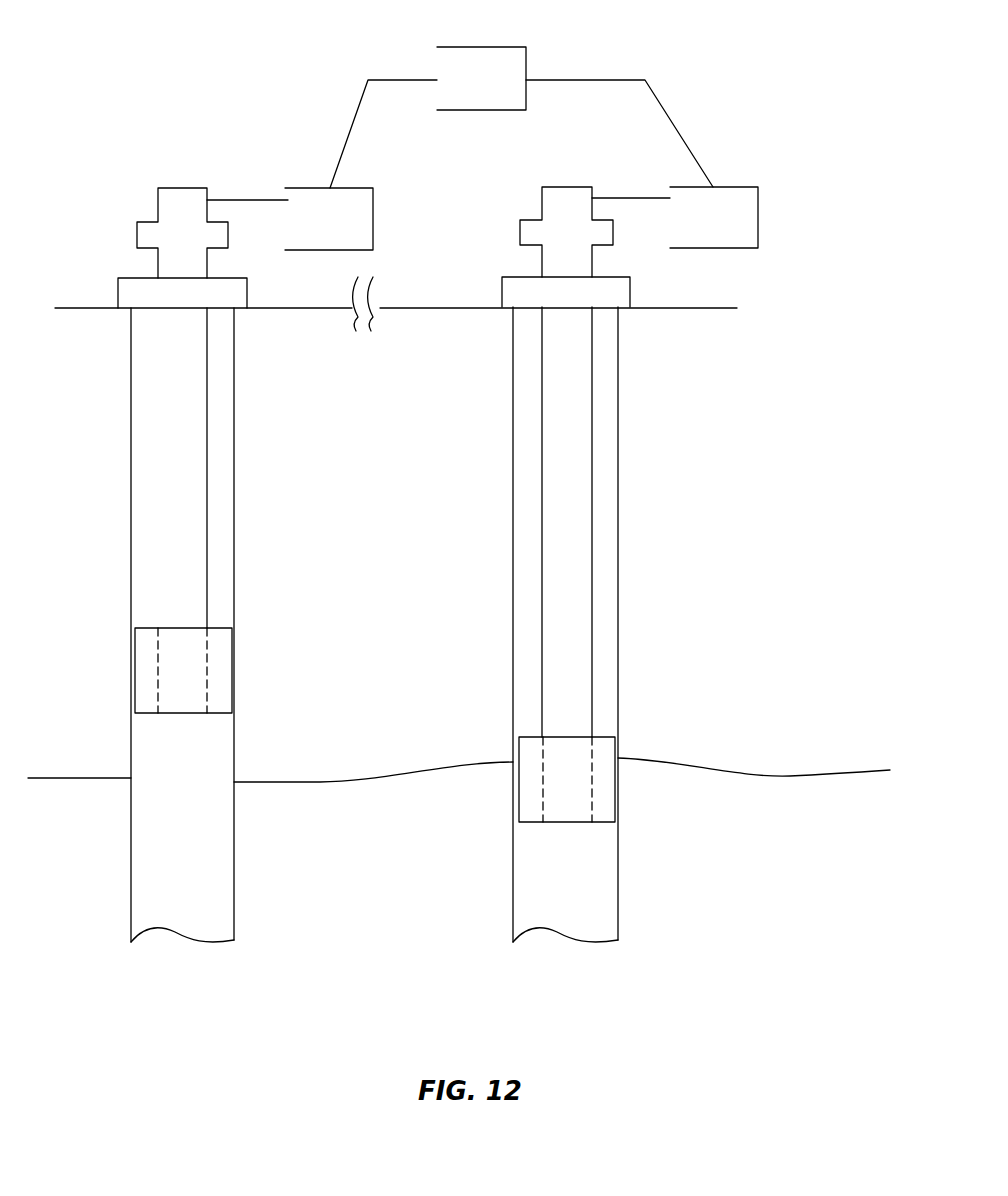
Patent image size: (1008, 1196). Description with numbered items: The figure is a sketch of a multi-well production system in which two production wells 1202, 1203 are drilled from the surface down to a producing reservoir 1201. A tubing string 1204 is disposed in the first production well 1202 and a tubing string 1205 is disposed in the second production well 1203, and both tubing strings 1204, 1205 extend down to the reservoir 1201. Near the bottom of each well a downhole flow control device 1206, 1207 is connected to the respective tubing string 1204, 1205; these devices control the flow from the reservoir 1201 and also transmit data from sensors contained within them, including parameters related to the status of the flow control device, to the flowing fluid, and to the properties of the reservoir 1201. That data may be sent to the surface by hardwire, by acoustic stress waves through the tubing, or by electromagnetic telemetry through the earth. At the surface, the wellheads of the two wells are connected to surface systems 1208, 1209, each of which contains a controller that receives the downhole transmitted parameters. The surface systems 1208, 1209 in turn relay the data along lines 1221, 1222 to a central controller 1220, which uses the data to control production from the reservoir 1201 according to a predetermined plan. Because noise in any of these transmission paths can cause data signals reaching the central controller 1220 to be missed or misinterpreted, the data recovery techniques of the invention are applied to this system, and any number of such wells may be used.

The producing reservoir 1201 is at (803, 909).
The production well 1202 is at (234, 373).
The production well 1203 is at (618, 382).
The tubing string 1204 is at (207, 460).
The tubing string 1205 is at (592, 450).
The downhole flow control device 1206 is at (232, 638).
The downhole flow control device 1207 is at (615, 745).
The surface system 1208 is at (373, 200).
The surface system 1209 is at (758, 210).
The central controller 1220 is at (526, 60).
The line 1221 is at (407, 78).
The line 1222 is at (620, 78).